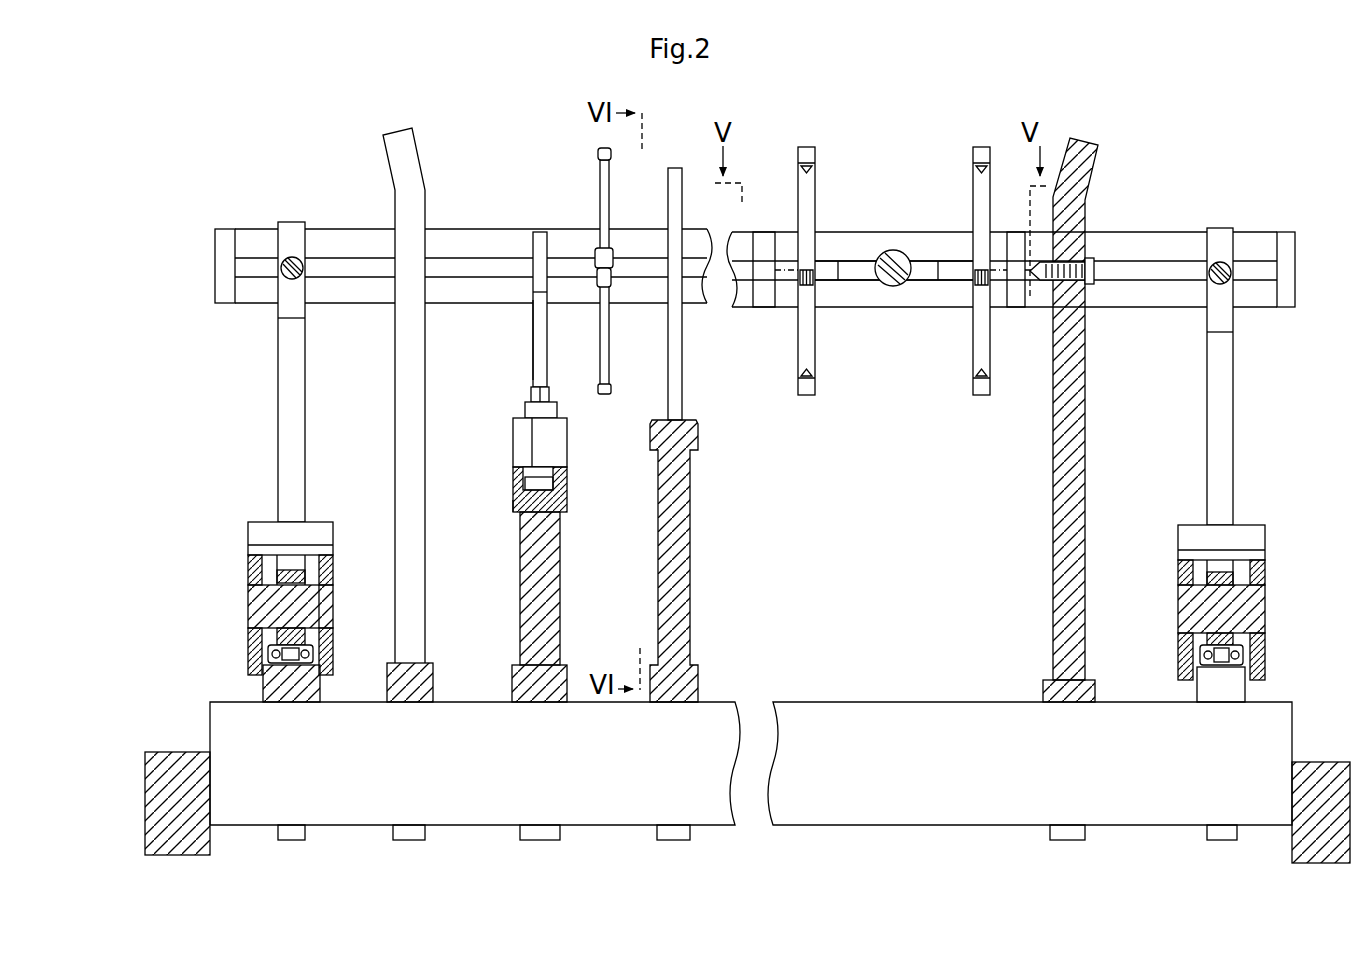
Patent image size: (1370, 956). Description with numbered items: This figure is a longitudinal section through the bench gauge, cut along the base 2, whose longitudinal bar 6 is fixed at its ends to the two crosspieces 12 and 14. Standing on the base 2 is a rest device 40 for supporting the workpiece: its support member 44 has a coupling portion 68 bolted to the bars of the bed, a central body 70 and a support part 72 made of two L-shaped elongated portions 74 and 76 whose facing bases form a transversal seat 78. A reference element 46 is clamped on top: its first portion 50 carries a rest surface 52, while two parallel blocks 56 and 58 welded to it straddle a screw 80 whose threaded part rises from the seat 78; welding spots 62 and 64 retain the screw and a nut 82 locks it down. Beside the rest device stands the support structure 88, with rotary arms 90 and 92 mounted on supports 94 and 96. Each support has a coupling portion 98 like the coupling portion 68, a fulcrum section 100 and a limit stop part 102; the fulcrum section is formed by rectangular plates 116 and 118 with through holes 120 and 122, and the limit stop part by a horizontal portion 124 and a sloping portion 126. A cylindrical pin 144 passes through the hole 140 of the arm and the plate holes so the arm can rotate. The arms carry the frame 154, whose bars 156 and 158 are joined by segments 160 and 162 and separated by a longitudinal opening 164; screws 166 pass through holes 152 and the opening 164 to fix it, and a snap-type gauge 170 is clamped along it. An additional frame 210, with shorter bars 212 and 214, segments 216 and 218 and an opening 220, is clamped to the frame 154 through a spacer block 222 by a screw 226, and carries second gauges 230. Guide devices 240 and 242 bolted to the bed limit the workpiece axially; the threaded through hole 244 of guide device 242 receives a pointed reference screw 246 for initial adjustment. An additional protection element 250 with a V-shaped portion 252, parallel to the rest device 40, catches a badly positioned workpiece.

The base 2 is at (180, 735).
The longitudinal bar 6 is at (355, 805).
The crosspiece 12 is at (150, 783).
The crosspiece 14 is at (1320, 766).
The rest device 40 is at (505, 442).
The support member 44 is at (510, 556).
The reference element 46 is at (513, 333).
The first portion 50 is at (548, 323).
The rest surface 52 is at (540, 232).
The block 56 is at (515, 456).
The block 58 is at (560, 456).
The welding spot 62 is at (532, 430).
The welding spot 64 is at (550, 430).
The coupling portion 68 is at (512, 670).
The central body 70 is at (520, 583).
The support part 72 is at (520, 502).
The L-shaped elongated portion 74 is at (521, 482).
The L-shaped elongated portion 76 is at (570, 500).
The transversal seat 78 is at (567, 470).
The screw 80 is at (551, 402).
The nut 82 is at (531, 398).
The support structure 88 is at (268, 380).
The rotary arm 90 is at (285, 421).
The rotary arm 92 is at (1232, 408).
The support 94 is at (243, 555).
The support 96 is at (1268, 520).
The coupling portion 98 is at (262, 683).
The fulcrum section 100 is at (240, 600).
The limit stop part 102 is at (262, 500).
The rectangular plate 116 is at (248, 657).
The rectangular plate 118 is at (328, 566).
The through hole 120 is at (250, 585).
The through hole 122 is at (335, 584).
The portion 124 is at (250, 556).
The portion 126 is at (312, 528).
The hole 140 is at (252, 626).
The cylindrical pin 144 is at (332, 612).
The hole 152 is at (286, 280).
The frame 154 is at (365, 208).
The bar 156 is at (245, 215).
The bar 158 is at (240, 296).
The segment 160 is at (225, 258).
The segment 162 is at (1292, 292).
The longitudinal opening 164 is at (1250, 268).
The screw 166 is at (292, 257).
The gauge 170 is at (600, 182).
The additional frame 210 is at (897, 228).
The bar 212 is at (845, 250).
The bar 214 is at (845, 300).
The segment 216 is at (763, 240).
The segment 218 is at (1015, 300).
The opening 220 is at (955, 262).
The spacer block 222 is at (925, 278).
The screw 226 is at (893, 288).
The second gauge 230 is at (984, 168).
The guide device 240 is at (422, 176).
The guide device 242 is at (1095, 158).
The threaded through hole 244 is at (1080, 262).
The pointed reference screw 246 is at (1090, 288).
The additional protection element 250 is at (712, 492).
The V-shaped portion 252 is at (684, 392).